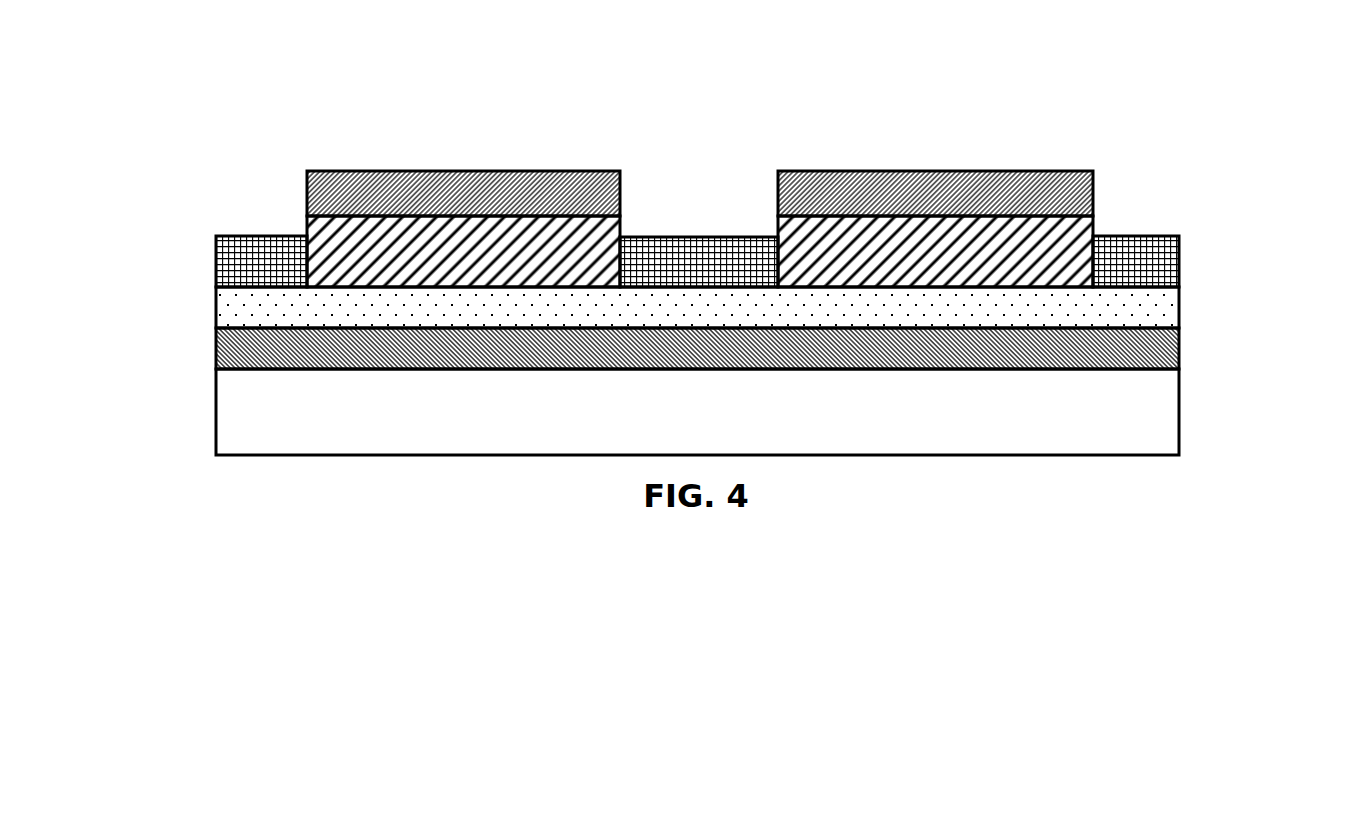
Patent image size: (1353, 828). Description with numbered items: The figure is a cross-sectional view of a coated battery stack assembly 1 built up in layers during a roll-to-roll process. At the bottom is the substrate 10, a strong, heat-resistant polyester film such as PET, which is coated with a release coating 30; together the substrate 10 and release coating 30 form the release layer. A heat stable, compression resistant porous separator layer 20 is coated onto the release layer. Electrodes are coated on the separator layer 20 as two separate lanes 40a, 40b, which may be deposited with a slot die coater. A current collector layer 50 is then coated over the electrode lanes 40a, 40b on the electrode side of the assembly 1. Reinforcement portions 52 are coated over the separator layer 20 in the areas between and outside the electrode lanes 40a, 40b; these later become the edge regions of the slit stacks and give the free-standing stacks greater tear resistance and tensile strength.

The assembly 1 is at (1181, 96).
The substrate 10 is at (1179, 410).
The separator layer 20 is at (1179, 310).
The release coating 30 is at (1179, 358).
The electrode lane 40a is at (335, 238).
The electrode lane 40b is at (1093, 225).
The current collector layer 50 is at (620, 172).
The reinforcement portions 52 is at (240, 268).